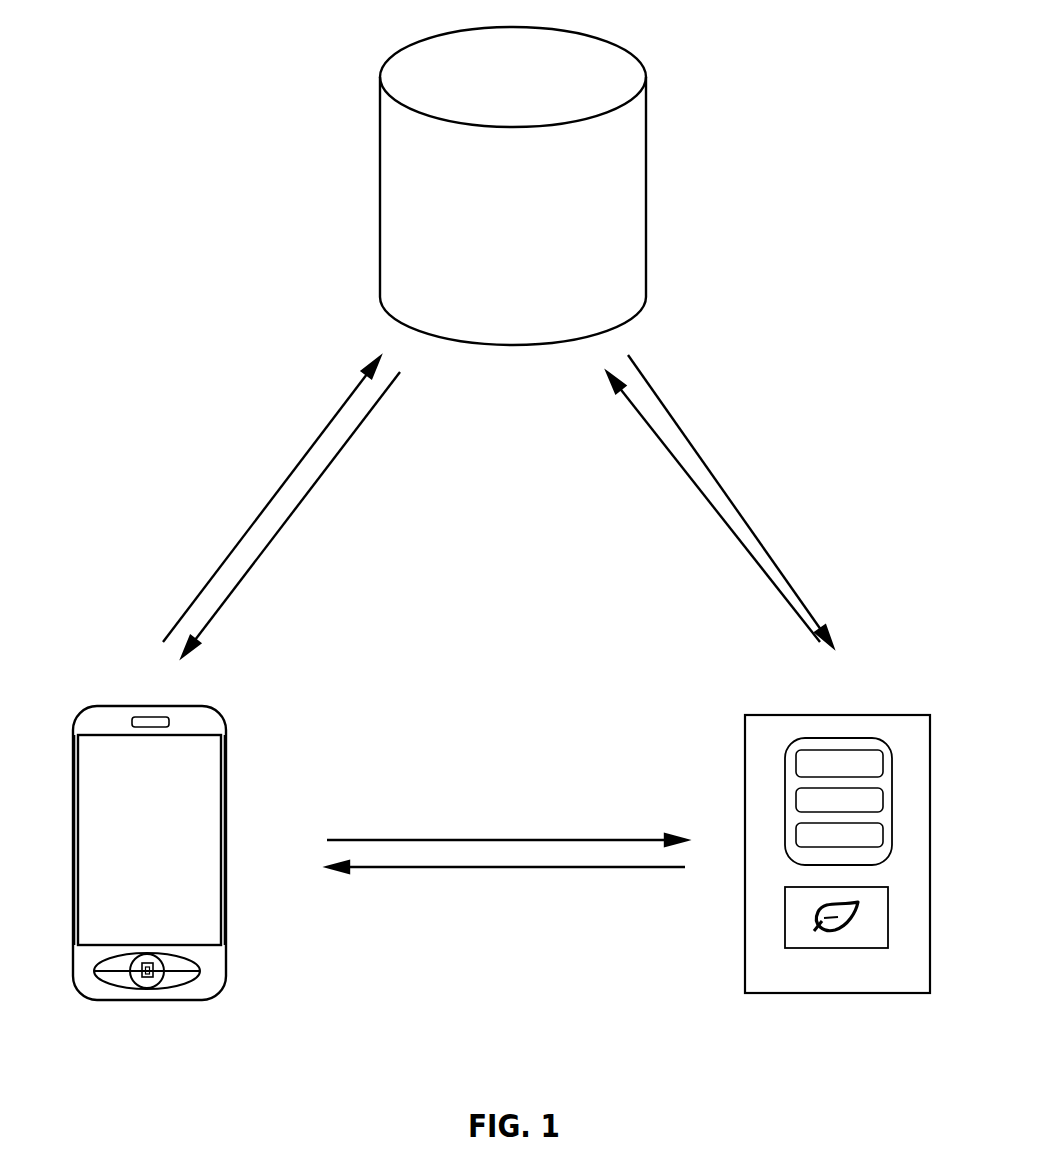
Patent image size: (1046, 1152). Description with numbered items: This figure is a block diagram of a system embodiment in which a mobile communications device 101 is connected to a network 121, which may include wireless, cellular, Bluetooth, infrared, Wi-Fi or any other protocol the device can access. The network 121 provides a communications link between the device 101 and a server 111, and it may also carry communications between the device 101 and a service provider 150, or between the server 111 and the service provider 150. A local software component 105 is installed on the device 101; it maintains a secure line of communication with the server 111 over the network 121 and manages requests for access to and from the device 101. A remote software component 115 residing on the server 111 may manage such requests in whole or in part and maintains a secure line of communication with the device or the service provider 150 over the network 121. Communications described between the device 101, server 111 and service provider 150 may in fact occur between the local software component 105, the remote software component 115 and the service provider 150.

The service provider 150 is at (617, 62).
The mobile communications device 101 is at (186, 871).
The local software component 105 is at (147, 978).
The server 111 is at (828, 865).
The remote software component 115 is at (845, 935).
The network 121 is at (285, 493).